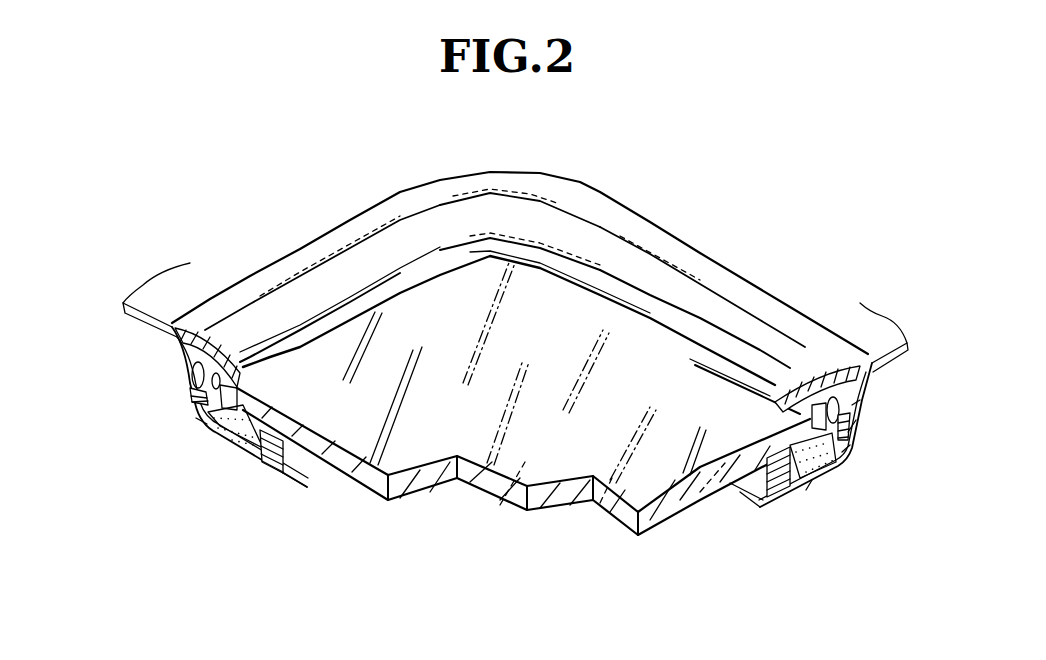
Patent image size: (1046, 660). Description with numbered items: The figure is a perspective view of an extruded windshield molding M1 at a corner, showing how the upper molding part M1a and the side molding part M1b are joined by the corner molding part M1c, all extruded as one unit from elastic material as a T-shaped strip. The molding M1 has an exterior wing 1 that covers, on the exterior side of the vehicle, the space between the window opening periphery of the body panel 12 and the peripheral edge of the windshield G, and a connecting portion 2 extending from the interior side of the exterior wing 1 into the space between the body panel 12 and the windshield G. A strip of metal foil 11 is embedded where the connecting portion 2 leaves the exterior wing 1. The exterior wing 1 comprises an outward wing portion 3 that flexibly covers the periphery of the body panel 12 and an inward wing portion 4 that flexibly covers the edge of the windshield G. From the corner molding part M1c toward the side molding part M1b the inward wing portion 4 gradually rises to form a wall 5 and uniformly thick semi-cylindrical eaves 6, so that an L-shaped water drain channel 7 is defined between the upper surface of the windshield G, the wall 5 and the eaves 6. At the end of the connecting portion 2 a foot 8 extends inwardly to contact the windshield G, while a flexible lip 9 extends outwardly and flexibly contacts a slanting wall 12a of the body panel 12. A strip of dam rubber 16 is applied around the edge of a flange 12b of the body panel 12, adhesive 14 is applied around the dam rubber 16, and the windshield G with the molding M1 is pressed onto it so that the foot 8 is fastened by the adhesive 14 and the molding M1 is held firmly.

The windshield molding M1 is at (656, 201).
The upper molding part M1a is at (322, 240).
The side molding part M1b is at (690, 258).
The corner molding part M1c is at (550, 188).
The exterior wing 1 is at (200, 340).
The connecting portion 2 is at (193, 413).
The outward wing portion 3 is at (178, 347).
The inward wing portion 4 is at (233, 372).
The wall 5 is at (785, 390).
The semi-cylindrical eaves 6 is at (730, 355).
The water drain channel 7 is at (745, 382).
The foot 8 is at (203, 430).
The flexible lip 9 is at (187, 380).
The metal foil 11 is at (847, 430).
The body panel 12 is at (146, 323).
The slanting wall 12a is at (843, 450).
The flange 12b is at (812, 480).
The adhesive 14 is at (233, 430).
The dam rubber 16 is at (273, 467).
The windshield G is at (472, 483).